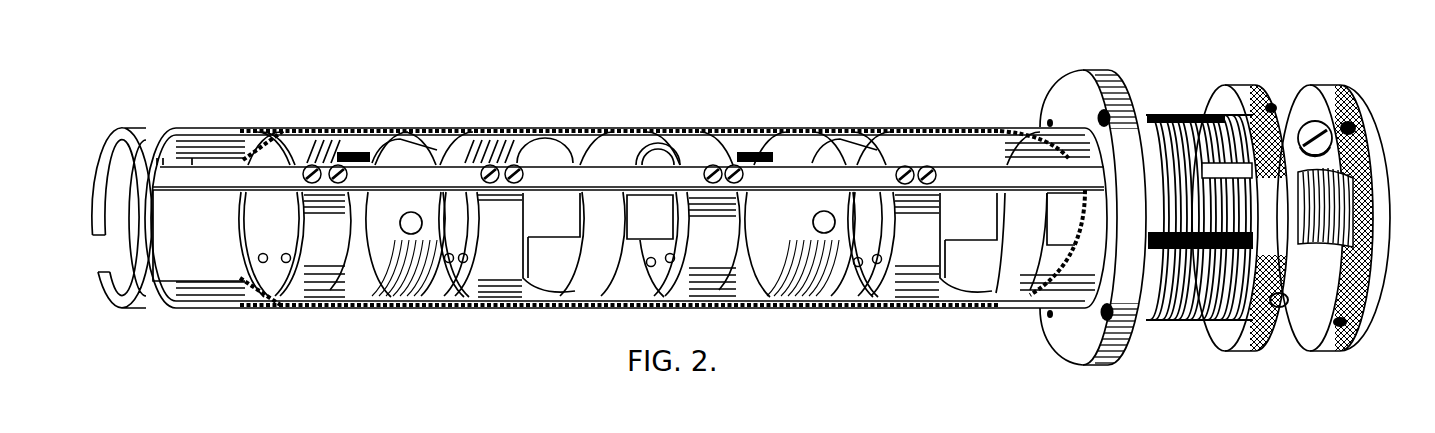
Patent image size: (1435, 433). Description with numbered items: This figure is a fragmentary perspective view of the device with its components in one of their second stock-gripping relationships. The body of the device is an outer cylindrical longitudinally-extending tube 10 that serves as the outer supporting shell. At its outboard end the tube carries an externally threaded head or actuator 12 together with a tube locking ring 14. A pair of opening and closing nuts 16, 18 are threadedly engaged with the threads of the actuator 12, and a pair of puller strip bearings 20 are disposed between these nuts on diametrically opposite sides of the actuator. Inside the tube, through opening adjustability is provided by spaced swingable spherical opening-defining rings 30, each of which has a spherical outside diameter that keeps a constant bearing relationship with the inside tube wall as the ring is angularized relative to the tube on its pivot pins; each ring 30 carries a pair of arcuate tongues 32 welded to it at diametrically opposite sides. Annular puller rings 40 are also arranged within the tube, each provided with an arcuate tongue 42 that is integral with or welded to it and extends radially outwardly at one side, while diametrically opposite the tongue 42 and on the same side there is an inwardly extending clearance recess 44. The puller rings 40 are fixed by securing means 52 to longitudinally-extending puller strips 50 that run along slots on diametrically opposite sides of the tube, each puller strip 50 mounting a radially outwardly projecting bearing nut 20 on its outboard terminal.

The tube 10 is at (668, 130).
The actuator 12 is at (1162, 60).
The tube locking ring 14 is at (1098, 70).
The opening nut 16 is at (1310, 86).
The closing nut 18 is at (1230, 86).
The puller strip bearing 20 is at (1308, 122).
The opening-defining ring 30 is at (390, 259).
The arcuate tongue 32 is at (423, 150).
The puller ring 40 is at (307, 244).
The arcuate tongue 42 is at (346, 151).
The clearance recess 44 is at (453, 268).
The puller strip 50 is at (616, 190).
The securing means 52 is at (310, 165).